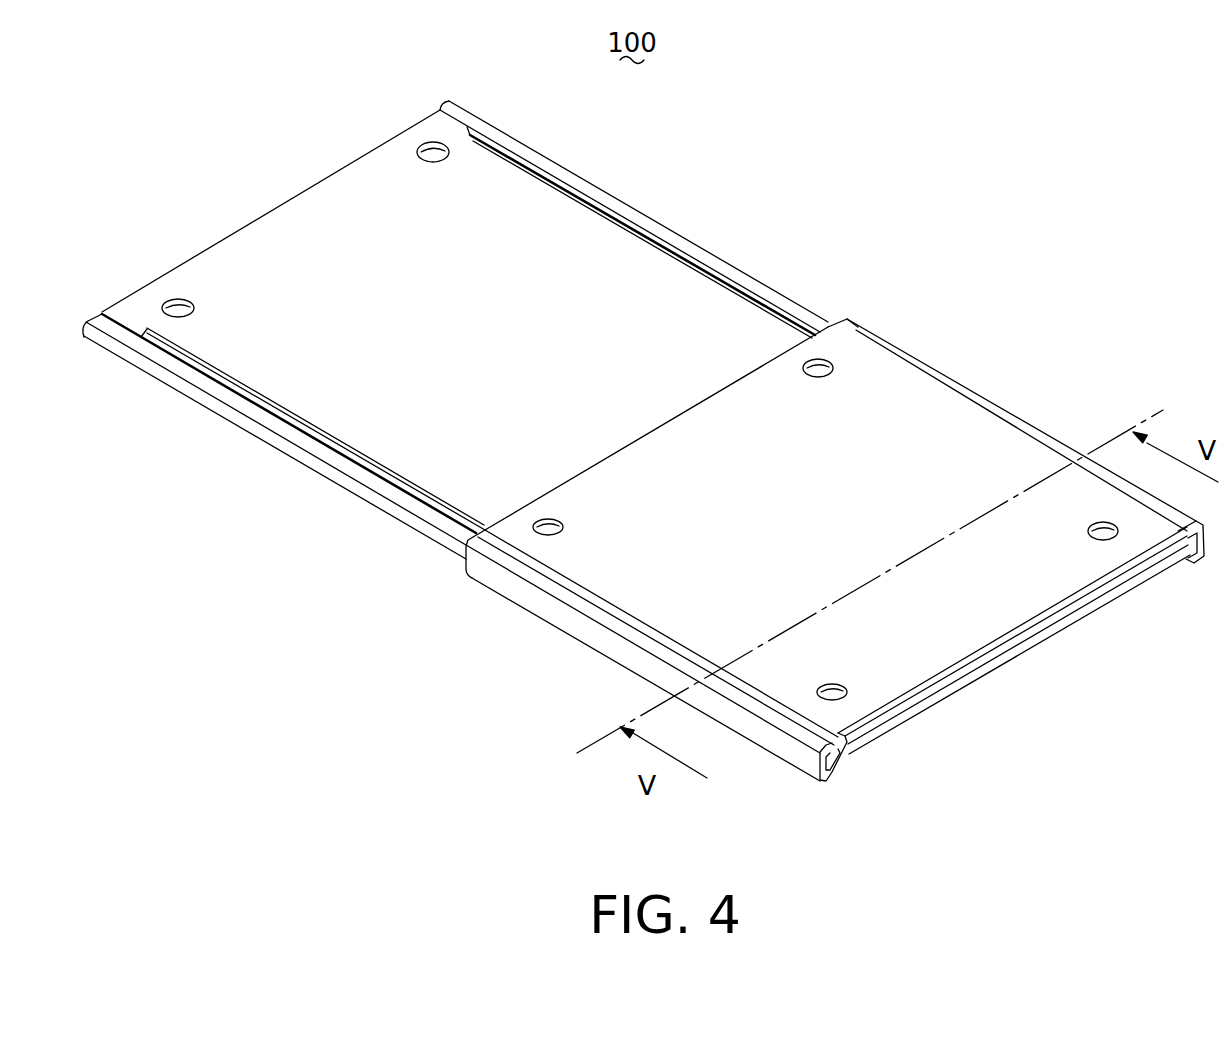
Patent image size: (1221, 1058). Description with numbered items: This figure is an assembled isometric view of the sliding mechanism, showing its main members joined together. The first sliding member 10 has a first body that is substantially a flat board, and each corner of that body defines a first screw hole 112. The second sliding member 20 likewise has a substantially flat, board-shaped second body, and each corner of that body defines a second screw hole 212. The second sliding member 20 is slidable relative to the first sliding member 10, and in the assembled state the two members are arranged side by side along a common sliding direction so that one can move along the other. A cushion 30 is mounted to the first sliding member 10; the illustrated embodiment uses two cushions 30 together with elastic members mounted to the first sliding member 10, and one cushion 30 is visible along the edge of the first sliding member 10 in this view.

The first sliding member 10 is at (356, 232).
The first screw hole 112 is at (426, 147).
The second sliding member 20 is at (938, 448).
The second screw hole 212 is at (826, 362).
The cushion 30 is at (245, 403).